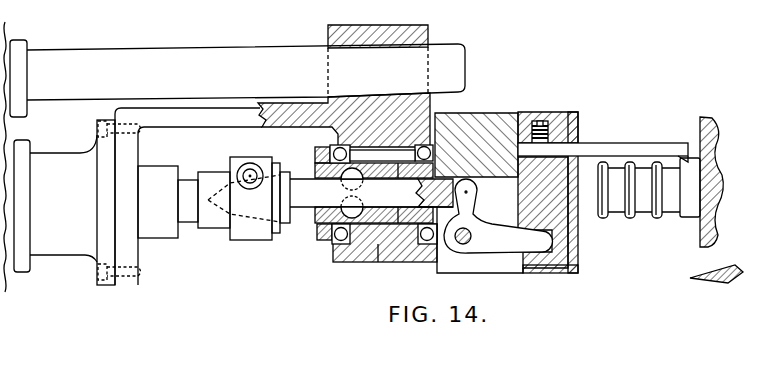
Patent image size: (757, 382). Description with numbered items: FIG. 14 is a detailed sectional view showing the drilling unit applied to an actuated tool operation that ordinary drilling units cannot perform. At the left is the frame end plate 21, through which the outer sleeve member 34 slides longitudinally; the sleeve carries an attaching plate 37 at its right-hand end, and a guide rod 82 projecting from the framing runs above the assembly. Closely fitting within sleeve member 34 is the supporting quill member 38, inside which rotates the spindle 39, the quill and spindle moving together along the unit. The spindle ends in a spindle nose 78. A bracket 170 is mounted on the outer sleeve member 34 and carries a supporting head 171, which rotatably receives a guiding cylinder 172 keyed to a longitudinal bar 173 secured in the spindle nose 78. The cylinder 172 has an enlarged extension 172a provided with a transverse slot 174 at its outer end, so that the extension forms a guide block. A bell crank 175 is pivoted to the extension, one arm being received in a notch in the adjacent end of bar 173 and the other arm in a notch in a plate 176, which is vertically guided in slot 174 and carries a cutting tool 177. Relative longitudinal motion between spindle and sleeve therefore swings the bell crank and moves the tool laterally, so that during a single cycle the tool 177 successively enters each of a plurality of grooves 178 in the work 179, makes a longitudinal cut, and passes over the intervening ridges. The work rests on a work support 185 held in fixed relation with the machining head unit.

The end plate 21 is at (12, 127).
The sleeve member 34 is at (55, 247).
The attaching plate 37 is at (107, 252).
The supporting quill member 38 is at (167, 232).
The spindle 39 is at (192, 215).
The spindle nose 78 is at (253, 235).
The guide rod 82 is at (186, 50).
The bracket 170 is at (240, 80).
The supporting head 171 is at (428, 29).
The guiding cylinder 172 is at (377, 235).
The enlarged extension 172a is at (467, 128).
The longitudinal bar 173 is at (313, 203).
The transverse slot 174 is at (557, 112).
The bell crank 175 is at (502, 247).
The plate 176 is at (558, 218).
The cutting tool 177 is at (653, 122).
The grooves 178 is at (620, 217).
The work 179 is at (713, 135).
The work support 185 is at (710, 272).